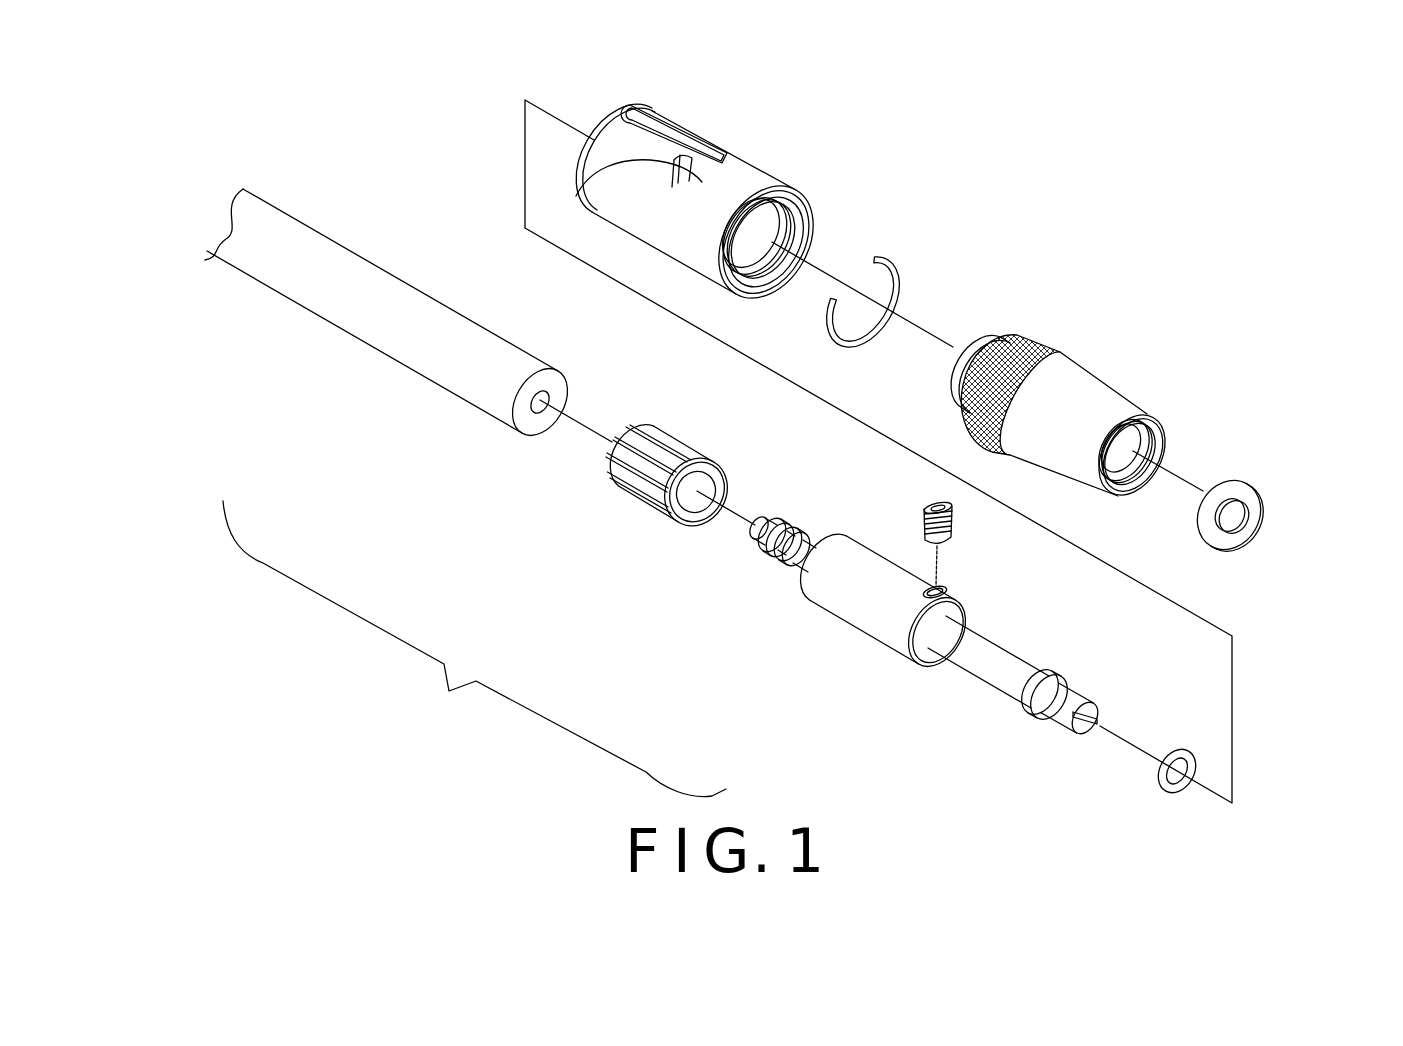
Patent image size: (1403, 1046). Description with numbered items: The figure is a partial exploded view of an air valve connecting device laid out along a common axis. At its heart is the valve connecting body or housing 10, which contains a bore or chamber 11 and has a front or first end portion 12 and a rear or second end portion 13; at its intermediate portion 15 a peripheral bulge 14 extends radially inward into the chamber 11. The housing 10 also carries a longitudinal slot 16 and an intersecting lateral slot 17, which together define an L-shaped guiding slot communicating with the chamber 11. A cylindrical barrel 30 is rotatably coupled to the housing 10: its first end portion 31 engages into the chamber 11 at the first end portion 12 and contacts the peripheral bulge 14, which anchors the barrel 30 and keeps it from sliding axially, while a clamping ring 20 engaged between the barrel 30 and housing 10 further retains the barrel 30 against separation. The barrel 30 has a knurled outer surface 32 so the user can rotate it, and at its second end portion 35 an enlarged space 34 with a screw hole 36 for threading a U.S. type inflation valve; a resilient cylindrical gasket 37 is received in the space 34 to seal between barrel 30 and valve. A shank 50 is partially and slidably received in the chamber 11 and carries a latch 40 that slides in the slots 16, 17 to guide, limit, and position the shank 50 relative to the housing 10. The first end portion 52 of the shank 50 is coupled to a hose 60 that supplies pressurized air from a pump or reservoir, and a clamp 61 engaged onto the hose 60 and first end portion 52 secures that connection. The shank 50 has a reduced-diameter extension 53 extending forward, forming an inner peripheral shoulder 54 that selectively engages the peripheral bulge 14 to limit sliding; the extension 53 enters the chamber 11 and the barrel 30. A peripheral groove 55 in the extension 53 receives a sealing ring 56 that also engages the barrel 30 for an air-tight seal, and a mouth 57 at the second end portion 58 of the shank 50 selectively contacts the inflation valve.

The housing 10 is at (679, 219).
The chamber 11 is at (787, 218).
The first end portion 12 is at (770, 184).
The second end portion 13 is at (580, 167).
The peripheral bulge 14 is at (732, 248).
The intermediate portion 15 is at (657, 230).
The longitudinal slot 16 is at (643, 118).
The lateral slot 17 is at (578, 190).
The clamping ring 20 is at (895, 267).
The barrel 30 is at (1126, 410).
The first end portion 31 is at (987, 332).
The knurled outer surface 32 is at (1043, 337).
The space 34 is at (1150, 442).
The second end portion 35 is at (1123, 410).
The screw hole 36 is at (1130, 490).
The cylindrical gasket 37 is at (1253, 487).
The latch 40 is at (925, 517).
The shank 50 is at (945, 635).
The first end portion 52 is at (780, 533).
The extension 53 is at (1036, 690).
The inner peripheral shoulder 54 is at (933, 654).
The peripheral groove 55 is at (1038, 672).
The sealing ring 56 is at (1173, 793).
The mouth 57 is at (1085, 715).
The second end portion 58 is at (1087, 703).
The hose 60 is at (433, 357).
The clamp 61 is at (637, 487).